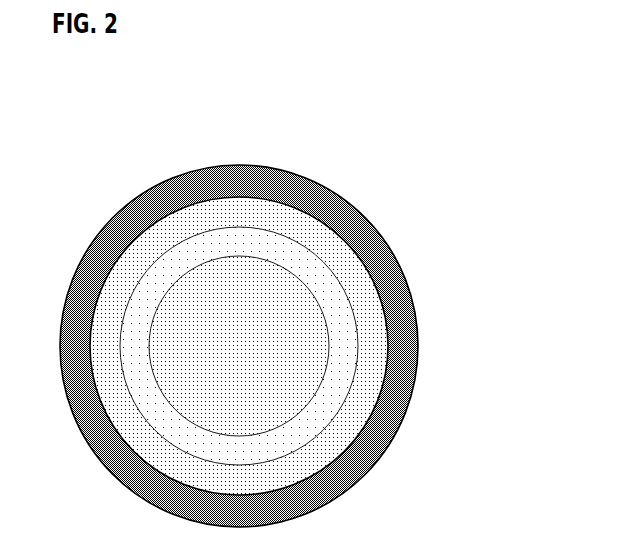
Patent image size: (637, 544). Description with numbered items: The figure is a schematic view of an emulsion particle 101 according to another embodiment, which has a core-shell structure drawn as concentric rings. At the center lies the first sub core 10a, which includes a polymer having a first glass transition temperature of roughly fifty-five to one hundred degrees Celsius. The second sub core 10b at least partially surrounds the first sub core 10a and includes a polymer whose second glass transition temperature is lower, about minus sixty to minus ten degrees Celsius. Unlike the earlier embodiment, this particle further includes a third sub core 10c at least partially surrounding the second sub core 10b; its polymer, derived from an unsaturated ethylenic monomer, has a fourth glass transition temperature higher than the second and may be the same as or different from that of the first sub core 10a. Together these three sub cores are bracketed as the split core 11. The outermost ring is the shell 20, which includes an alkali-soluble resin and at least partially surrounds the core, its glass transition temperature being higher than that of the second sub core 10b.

The emulsion particle 101 is at (343, 155).
The shell 20 is at (377, 230).
The electrode assembly core 11 is at (468, 260).
The third sub core 10c is at (357, 277).
The second sub core 10b is at (333, 313).
The first sub core 10a is at (317, 350).